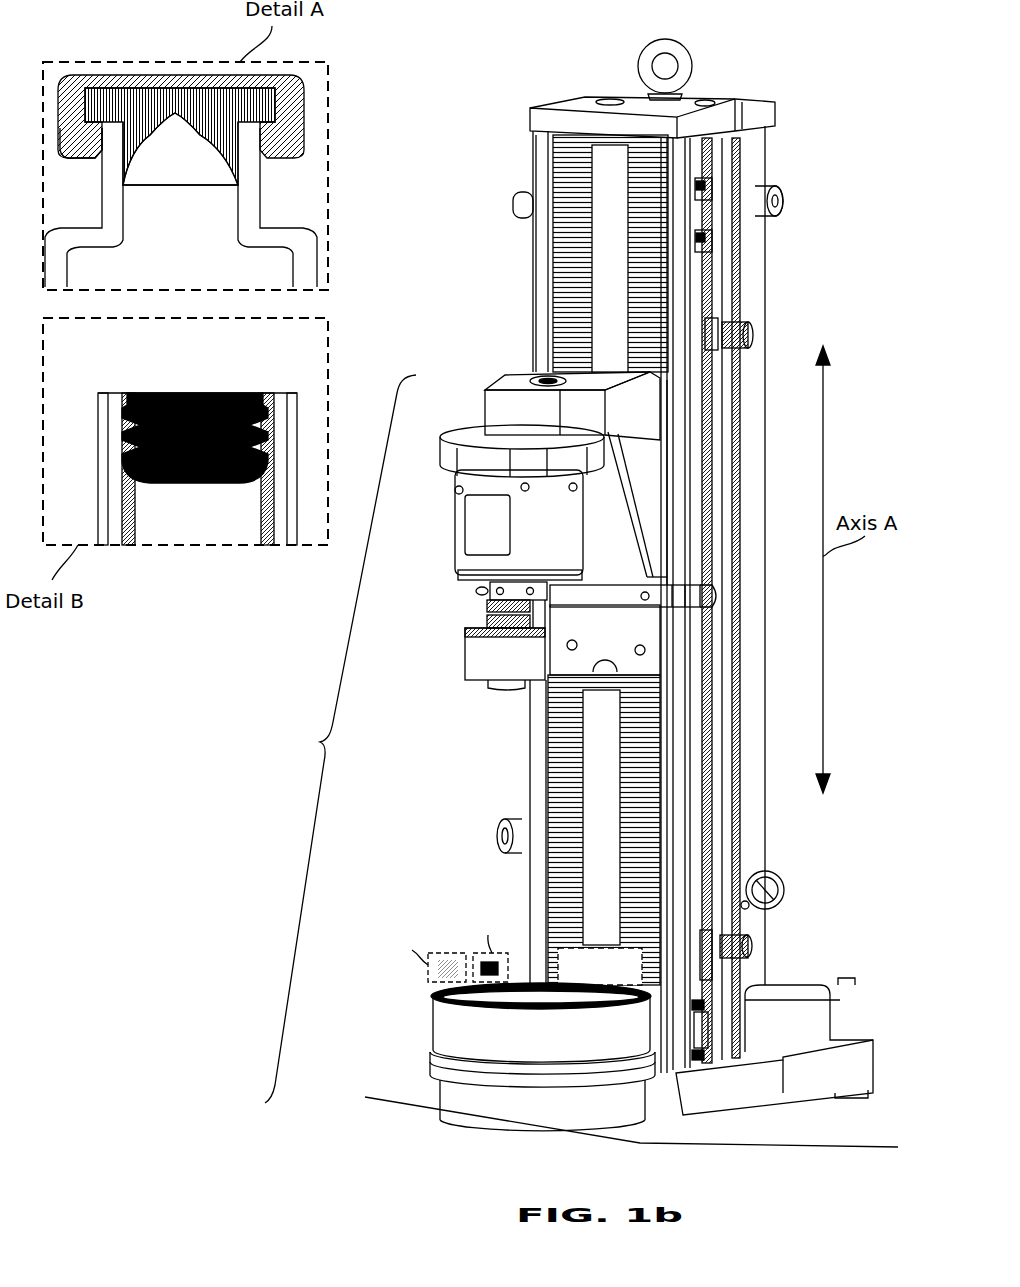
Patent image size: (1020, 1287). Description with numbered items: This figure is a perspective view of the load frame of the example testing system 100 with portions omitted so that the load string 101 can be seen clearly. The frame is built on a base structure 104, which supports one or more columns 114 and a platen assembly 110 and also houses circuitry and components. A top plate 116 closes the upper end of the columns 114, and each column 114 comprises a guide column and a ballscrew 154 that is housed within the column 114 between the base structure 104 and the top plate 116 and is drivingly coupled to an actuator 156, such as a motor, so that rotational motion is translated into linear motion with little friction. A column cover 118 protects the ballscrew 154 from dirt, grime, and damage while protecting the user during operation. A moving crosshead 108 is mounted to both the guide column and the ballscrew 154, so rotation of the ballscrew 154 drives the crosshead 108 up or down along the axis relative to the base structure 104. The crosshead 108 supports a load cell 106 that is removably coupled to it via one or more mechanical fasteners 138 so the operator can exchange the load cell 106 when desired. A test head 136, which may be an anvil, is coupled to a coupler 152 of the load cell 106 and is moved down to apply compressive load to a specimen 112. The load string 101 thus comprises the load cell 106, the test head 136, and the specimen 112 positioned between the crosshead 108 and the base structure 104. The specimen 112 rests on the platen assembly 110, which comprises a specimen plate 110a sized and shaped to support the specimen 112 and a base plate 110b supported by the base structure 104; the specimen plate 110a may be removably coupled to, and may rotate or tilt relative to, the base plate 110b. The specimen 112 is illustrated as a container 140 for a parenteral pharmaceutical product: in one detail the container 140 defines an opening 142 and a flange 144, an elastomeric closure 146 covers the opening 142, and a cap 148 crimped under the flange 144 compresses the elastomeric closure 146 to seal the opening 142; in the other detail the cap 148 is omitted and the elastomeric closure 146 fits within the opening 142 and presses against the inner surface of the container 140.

The testing system 100 is at (844, 152).
The load string 101 is at (302, 739).
The base structure 104 is at (885, 1093).
The load cell 106 is at (455, 512).
The crosshead 108 is at (485, 414).
The platen assembly 110 is at (477, 1041).
The specimen plate 110a is at (433, 1023).
The base plate 110b is at (514, 1090).
The specimen 112 is at (431, 933).
The column 114 is at (537, 262).
The top plate 116 is at (740, 100).
The column cover 118 is at (553, 210).
The test head 136 is at (465, 652).
The mechanical fastener 138 is at (543, 372).
The container 140 is at (102, 185).
The opening 142 is at (172, 193).
The flange 144 is at (258, 145).
The elastomeric closure 146 is at (202, 122).
The cap 148 is at (83, 155).
The coupler 152 is at (485, 600).
The ballscrew 154 is at (582, 696).
The actuator 156 is at (600, 966).